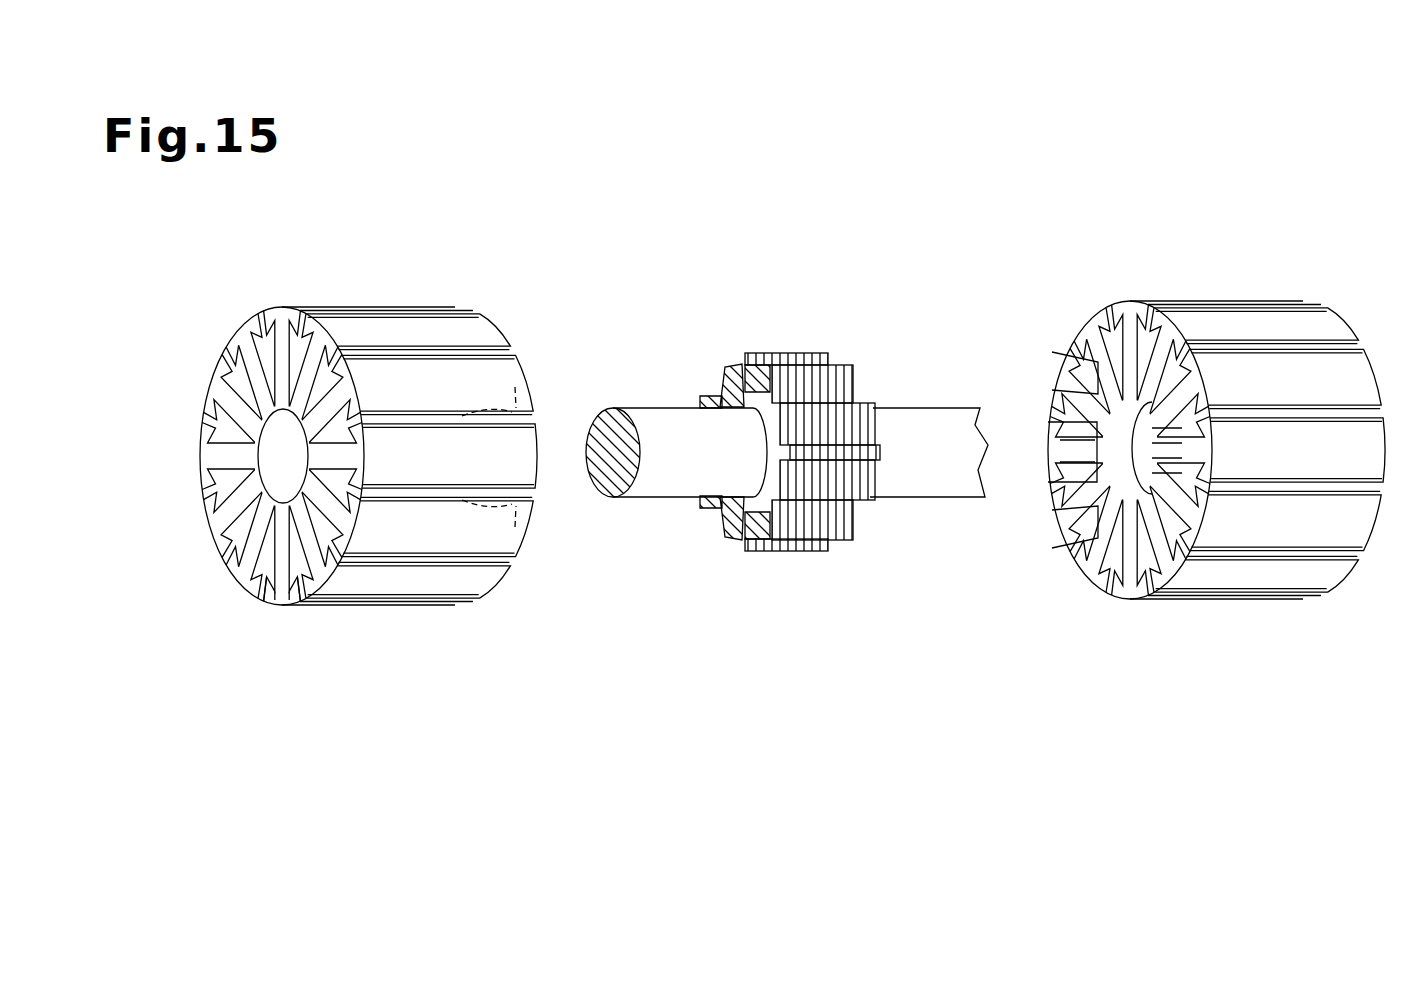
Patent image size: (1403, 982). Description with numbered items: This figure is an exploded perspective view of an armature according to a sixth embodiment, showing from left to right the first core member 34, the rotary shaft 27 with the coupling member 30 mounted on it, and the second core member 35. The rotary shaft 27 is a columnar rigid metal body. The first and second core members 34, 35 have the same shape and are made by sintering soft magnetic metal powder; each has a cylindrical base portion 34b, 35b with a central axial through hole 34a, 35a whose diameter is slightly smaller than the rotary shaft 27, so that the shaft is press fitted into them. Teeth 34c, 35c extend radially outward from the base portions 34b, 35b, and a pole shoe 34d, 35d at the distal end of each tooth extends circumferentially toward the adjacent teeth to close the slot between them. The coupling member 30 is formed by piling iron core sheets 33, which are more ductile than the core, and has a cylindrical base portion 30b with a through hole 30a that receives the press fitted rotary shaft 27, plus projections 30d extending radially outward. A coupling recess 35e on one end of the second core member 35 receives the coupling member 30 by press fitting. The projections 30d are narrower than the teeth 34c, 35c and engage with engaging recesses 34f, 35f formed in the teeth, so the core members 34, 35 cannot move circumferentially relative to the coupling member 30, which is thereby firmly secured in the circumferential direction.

The rotary shaft 27 is at (787, 423).
The coupling member 30 is at (762, 451).
The through hole 30a is at (762, 418).
The cylindrical base portion 30b is at (727, 520).
The projections 30d is at (777, 551).
The iron core sheets 33 is at (840, 548).
The first core member 34 is at (367, 464).
The through hole 34a is at (275, 440).
The cylindrical base portion 34b is at (232, 515).
The teeth 34c is at (240, 322).
The pole shoe 34d is at (300, 606).
The engaging recesses 34f is at (518, 388).
The second core member 35 is at (1182, 444).
The through hole 35a is at (1150, 462).
The cylindrical base portion 35b is at (1213, 540).
The teeth 35c is at (1270, 429).
The pole shoe 35d is at (1092, 358).
The coupling recess 35e is at (1060, 492).
The engaging recesses 35f is at (1075, 450).